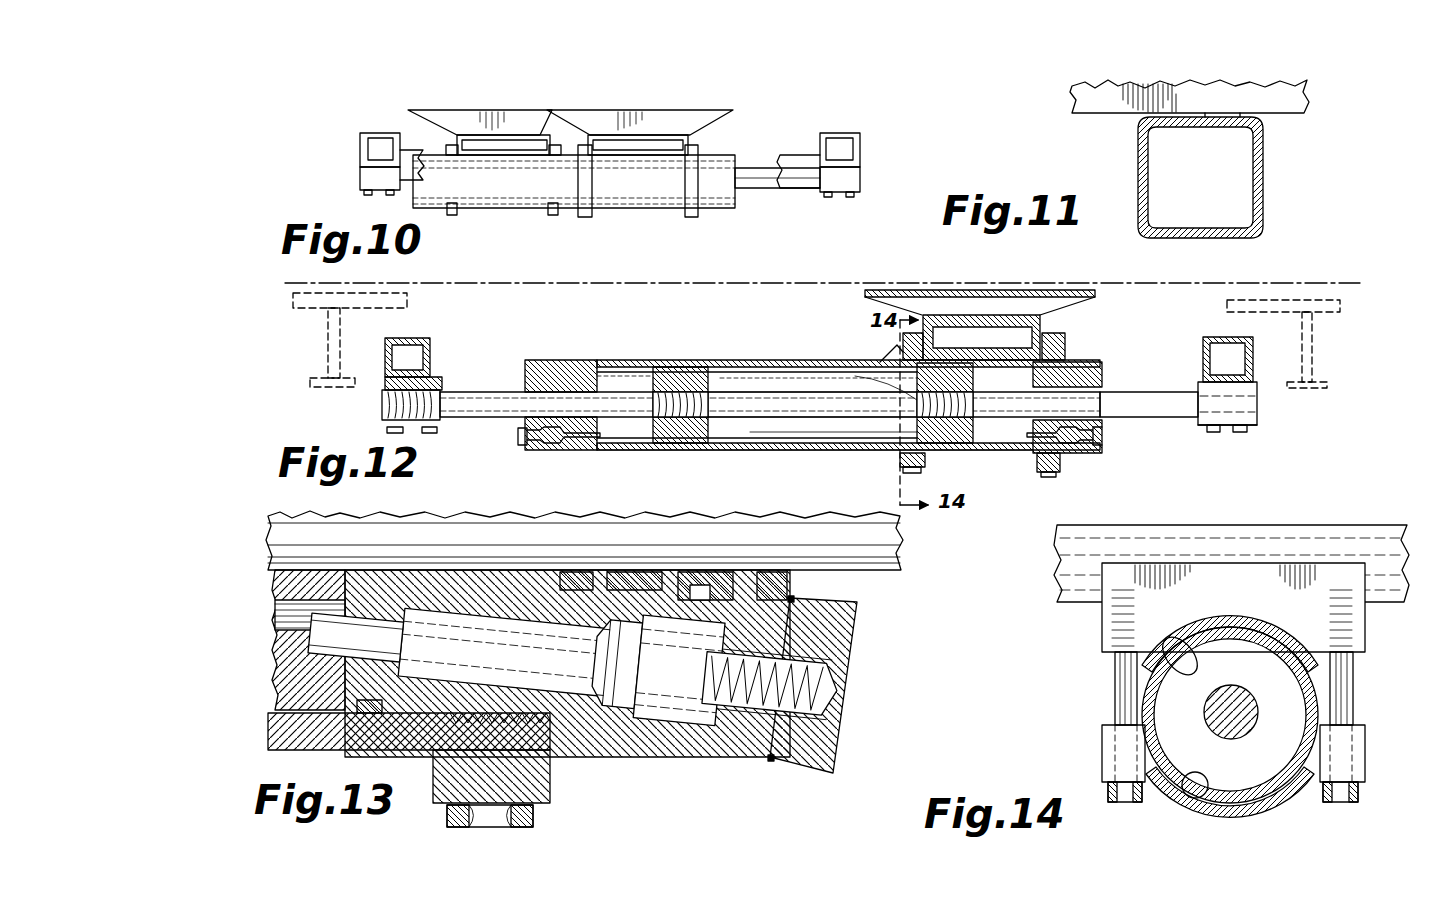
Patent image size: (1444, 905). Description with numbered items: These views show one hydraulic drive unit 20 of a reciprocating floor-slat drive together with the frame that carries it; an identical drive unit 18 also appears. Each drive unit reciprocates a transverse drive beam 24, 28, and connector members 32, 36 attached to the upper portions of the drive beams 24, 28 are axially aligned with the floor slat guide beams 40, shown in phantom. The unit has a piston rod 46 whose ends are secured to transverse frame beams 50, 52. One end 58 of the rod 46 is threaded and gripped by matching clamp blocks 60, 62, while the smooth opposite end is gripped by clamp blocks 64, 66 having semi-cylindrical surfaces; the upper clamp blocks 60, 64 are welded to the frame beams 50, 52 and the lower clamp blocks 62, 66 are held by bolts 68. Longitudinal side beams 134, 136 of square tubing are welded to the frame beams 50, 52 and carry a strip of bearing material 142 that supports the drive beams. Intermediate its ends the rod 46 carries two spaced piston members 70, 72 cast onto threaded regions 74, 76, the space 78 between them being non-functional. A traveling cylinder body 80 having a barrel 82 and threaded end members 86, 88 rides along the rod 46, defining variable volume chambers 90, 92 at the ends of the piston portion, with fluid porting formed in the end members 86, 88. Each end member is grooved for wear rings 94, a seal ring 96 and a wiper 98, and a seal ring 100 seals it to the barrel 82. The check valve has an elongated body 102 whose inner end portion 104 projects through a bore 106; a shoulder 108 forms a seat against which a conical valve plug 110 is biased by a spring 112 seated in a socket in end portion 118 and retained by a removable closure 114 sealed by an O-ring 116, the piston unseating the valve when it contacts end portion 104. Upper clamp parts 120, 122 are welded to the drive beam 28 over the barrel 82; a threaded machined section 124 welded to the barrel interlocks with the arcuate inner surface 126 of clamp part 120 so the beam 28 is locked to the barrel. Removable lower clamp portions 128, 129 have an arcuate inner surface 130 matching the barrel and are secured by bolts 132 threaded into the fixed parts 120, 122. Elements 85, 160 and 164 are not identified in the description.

In FIG. 14, the hydraulic drive unit 18 is at (1243, 528).
In FIG. 10, the hydraulic drive unit 20 is at (665, 187).
In FIG. 12, the hydraulic drive unit 20 is at (785, 458).
In FIG. 10, the transverse drive beam 24 is at (486, 135).
In FIG. 11, the transverse drive beam 24 is at (1100, 105).
In FIG. 12, the transverse drive beam 24 is at (328, 352).
In FIG. 10, the transverse drive beam 28 is at (614, 135).
In FIG. 12, the transverse drive beam 28 is at (1042, 326).
In FIG. 10, the connector member 32 is at (505, 118).
In FIG. 10, the connector member 36 is at (642, 120).
In FIG. 12, the connector member 36 is at (1006, 290).
In FIG. 12, the guide beam 40 is at (388, 293).
In FIG. 10, the piston rod 46 is at (760, 172).
In FIG. 12, the piston rod 46 is at (1160, 418).
In FIG. 10, the transverse frame beam 50 is at (378, 133).
In FIG. 12, the transverse frame beam 50 is at (430, 338).
In FIG. 10, the transverse frame beam 52 is at (840, 133).
In FIG. 12, the transverse frame beam 52 is at (1206, 337).
In FIG. 12, the threaded end portion 58 is at (382, 402).
In FIG. 12, the upper clamp block 60 is at (442, 377).
In FIG. 12, the lower clamp block 62 is at (446, 418).
In FIG. 12, the upper clamp block 64 is at (1258, 395).
In FIG. 12, the lower clamp block 66 is at (1258, 422).
In FIG. 12, the bolt 68 is at (428, 433).
In FIG. 12, the piston member 70 is at (706, 368).
In FIG. 12, the piston member 72 is at (922, 443).
In FIG. 12, the threaded region 74 is at (716, 386).
In FIG. 12, the threaded region 76 is at (916, 404).
In FIG. 12, the space 78 is at (818, 440).
In FIG. 12, the cylinder body 80 is at (738, 450).
In FIG. 13, the cylinder body 80 is at (372, 748).
In FIG. 12, the cylinder barrel 82 is at (606, 450).
In FIG. 14, the cylinder barrel 82 is at (1315, 705).
In FIG. 13, the rail 85 is at (868, 556).
In FIG. 12, the end member 86 is at (540, 360).
In FIG. 12, the end member 88 is at (1102, 368).
In FIG. 12, the variable volume chamber 90 is at (615, 367).
In FIG. 12, the variable volume chamber 92 is at (1010, 445).
In FIG. 13, the wear ring 94 is at (575, 572).
In FIG. 13, the seal ring 96 is at (710, 572).
In FIG. 13, the wiper 98 is at (778, 572).
In FIG. 13, the seal ring 100 is at (357, 712).
In FIG. 13, the elongated body 102 is at (430, 640).
In FIG. 13, the inner end portion 104 is at (318, 613).
In FIG. 13, the bore 106 is at (378, 625).
In FIG. 14, the bore 106 is at (1285, 735).
In FIG. 13, the shoulder 108 is at (608, 712).
In FIG. 13, the valve plug 110 is at (680, 718).
In FIG. 13, the spring 112 is at (820, 708).
In FIG. 13, the removable closure 114 is at (836, 760).
In FIG. 13, the O-ring seal 116 is at (771, 762).
In FIG. 13, the end portion 118 is at (720, 712).
In FIG. 12, the upper clamp part 120 is at (906, 346).
In FIG. 14, the upper clamp part 120 is at (1320, 568).
In FIG. 12, the upper clamp part 122 is at (1066, 346).
In FIG. 12, the machined section 124 is at (900, 355).
In FIG. 14, the arcuate inner surface 126 is at (1167, 670).
In FIG. 12, the removable lower clamp portion 128 is at (925, 461).
In FIG. 14, the removable lower clamp portion 128 is at (1285, 795).
In FIG. 12, the removable clamp part 129 is at (1060, 462).
In FIG. 14, the arcuate inner surface 130 is at (1190, 798).
In FIG. 13, the securement bolt 132 is at (533, 822).
In FIG. 14, the securement bolt 132 is at (1125, 690).
In FIG. 11, the longitudinal side beam 134 is at (1264, 175).
In FIG. 10, the longitudinal side beam 136 is at (410, 150).
In FIG. 11, the strip of bearing material 142 is at (1208, 115).
In FIG. 14, the clamp half 160 is at (1300, 660).
In FIG. 13, the threads 164 is at (450, 752).